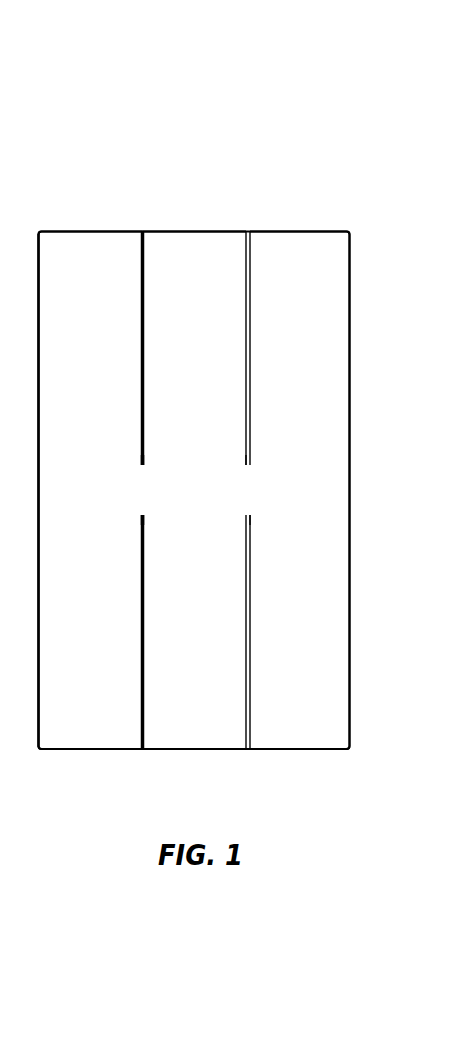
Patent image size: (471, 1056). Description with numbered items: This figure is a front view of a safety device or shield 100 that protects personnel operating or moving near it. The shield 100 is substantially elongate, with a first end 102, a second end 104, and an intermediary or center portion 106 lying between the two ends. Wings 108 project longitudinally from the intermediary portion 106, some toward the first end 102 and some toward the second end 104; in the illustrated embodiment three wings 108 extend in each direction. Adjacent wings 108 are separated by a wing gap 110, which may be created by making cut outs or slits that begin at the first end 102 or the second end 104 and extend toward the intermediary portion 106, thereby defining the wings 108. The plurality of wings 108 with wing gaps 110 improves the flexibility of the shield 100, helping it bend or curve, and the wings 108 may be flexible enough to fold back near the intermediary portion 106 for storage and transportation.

The shield 100 is at (193, 160).
The first end 102 is at (95, 220).
The second end 104 is at (296, 782).
The intermediary portion 106 is at (273, 495).
The wing 108 is at (308, 267).
The wing gap 110 is at (247, 222).